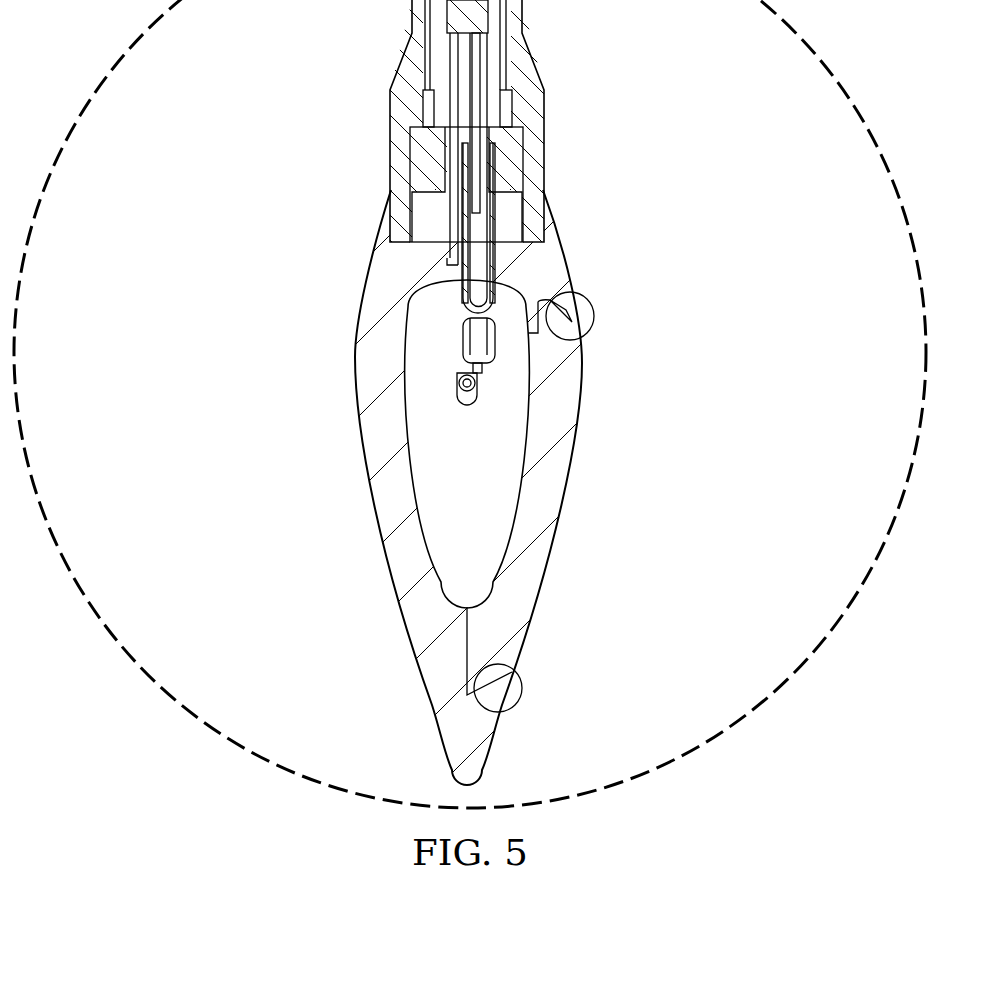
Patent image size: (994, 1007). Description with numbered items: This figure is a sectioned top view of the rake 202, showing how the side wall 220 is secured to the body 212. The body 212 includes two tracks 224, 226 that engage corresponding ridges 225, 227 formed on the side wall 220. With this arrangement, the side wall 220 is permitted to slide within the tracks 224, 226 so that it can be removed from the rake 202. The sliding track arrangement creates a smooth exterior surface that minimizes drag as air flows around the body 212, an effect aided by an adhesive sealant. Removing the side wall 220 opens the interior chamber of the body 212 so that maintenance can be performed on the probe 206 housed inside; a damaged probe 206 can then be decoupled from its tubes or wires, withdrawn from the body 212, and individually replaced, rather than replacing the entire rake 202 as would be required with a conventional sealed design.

The rake 202 is at (282, 130).
The probe 206 is at (531, 62).
The body 212 is at (353, 378).
The side wall 220 is at (560, 527).
The track 224 is at (570, 285).
The ridge 225 is at (575, 340).
The track 226 is at (512, 700).
The ridge 227 is at (520, 660).